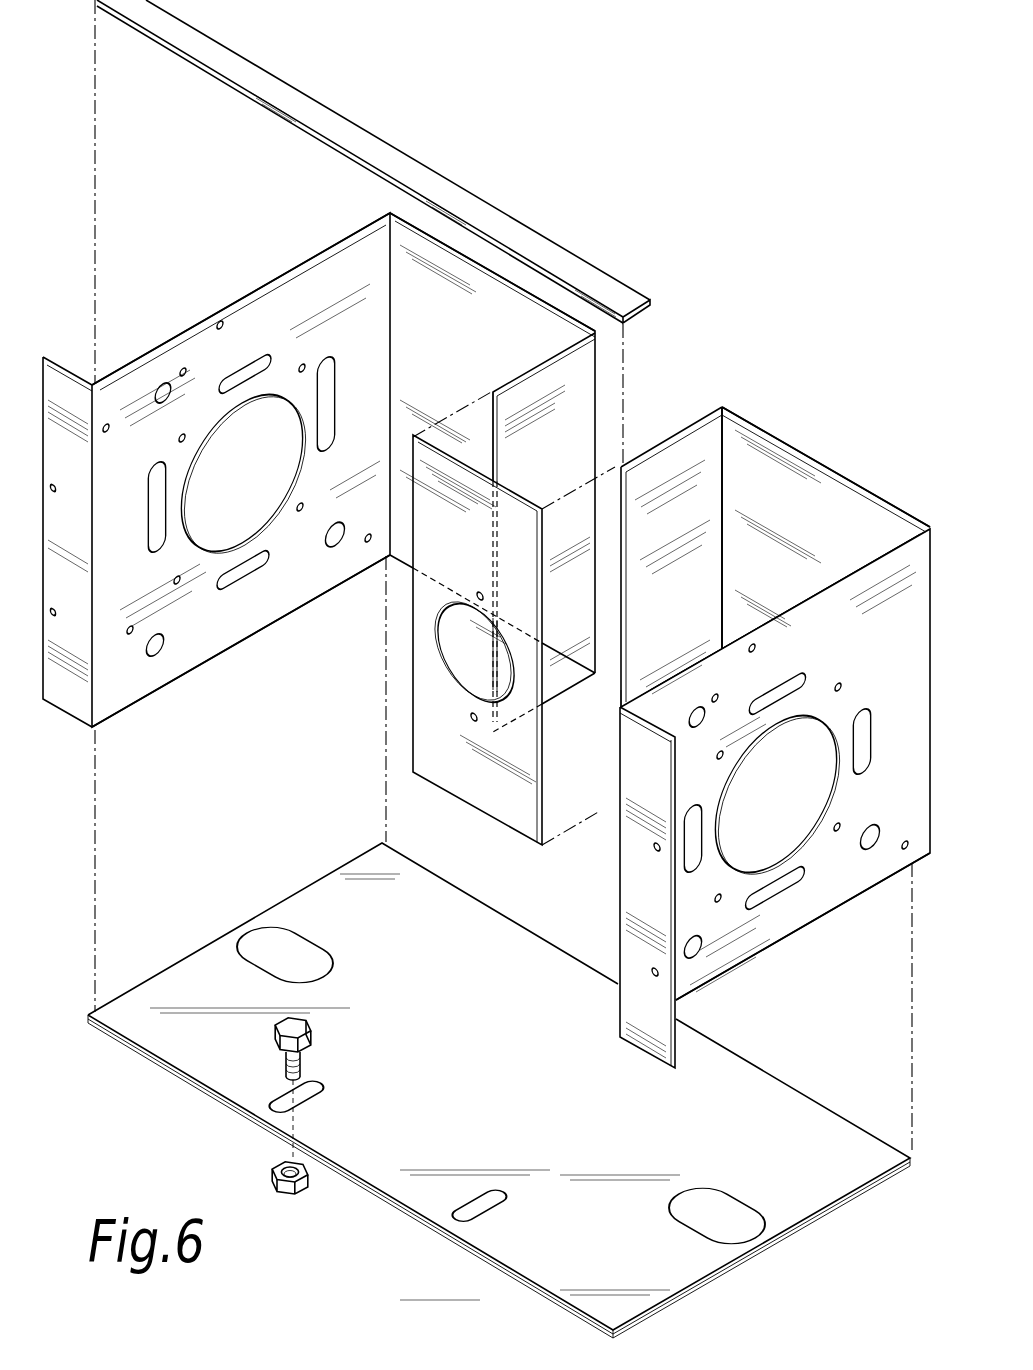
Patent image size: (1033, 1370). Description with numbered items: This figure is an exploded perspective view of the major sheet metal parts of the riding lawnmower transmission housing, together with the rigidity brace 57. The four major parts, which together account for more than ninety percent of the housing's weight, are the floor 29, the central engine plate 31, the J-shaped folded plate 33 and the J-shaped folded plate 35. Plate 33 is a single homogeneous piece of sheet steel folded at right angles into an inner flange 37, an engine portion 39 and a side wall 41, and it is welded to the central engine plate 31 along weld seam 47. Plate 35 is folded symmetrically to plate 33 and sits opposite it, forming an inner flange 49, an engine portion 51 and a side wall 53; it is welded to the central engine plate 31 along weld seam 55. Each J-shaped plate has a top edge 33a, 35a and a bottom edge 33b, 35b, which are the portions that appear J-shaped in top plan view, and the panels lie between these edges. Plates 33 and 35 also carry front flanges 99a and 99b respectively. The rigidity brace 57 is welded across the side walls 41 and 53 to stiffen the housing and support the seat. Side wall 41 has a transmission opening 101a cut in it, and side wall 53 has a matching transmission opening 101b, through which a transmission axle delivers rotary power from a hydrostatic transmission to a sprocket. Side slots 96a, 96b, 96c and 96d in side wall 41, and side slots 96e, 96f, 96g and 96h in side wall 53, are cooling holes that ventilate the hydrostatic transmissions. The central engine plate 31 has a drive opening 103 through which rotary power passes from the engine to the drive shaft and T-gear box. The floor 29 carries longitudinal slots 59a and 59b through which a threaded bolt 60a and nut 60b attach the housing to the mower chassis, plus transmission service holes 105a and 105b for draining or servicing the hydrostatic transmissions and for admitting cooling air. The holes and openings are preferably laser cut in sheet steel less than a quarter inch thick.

The floor 29 is at (499, 1090).
The central engine plate 31 is at (477, 640).
The J-shaped folded plate 33 is at (775, 737).
The top edge 33a is at (716, 440).
The bottom edge 33b is at (850, 912).
The J-shaped folded plate 35 is at (319, 462).
The top edge 35a is at (236, 293).
The bottom edge 35b is at (258, 640).
The inner flange 37 is at (681, 575).
The engine portion 39 is at (797, 575).
The side wall 41 is at (775, 764).
The weld seam 47 is at (618, 690).
The inner flange 49 is at (525, 532).
The engine portion 51 is at (468, 360).
The side wall 53 is at (241, 470).
The weld seam 55 is at (489, 441).
The rigidity brace 57 is at (422, 168).
The slot 59a is at (460, 1222).
The slot 59b is at (272, 1112).
The bolt 60a is at (308, 1038).
The nut 60b is at (300, 1192).
The side slot 96a is at (798, 676).
The side slot 96b is at (698, 812).
The side slot 96c is at (800, 882).
The side slot 96d is at (876, 731).
The side slot 96e is at (267, 355).
The side slot 96f is at (150, 528).
The side slot 96g is at (262, 570).
The side slot 96h is at (336, 418).
The front flange 99a is at (668, 775).
The front flange 99b is at (84, 457).
The transmission opening 101a is at (802, 807).
The transmission opening 101b is at (270, 486).
The drive opening 103 is at (482, 657).
The transmission service hole 105a is at (758, 1236).
The transmission service hole 105b is at (250, 928).